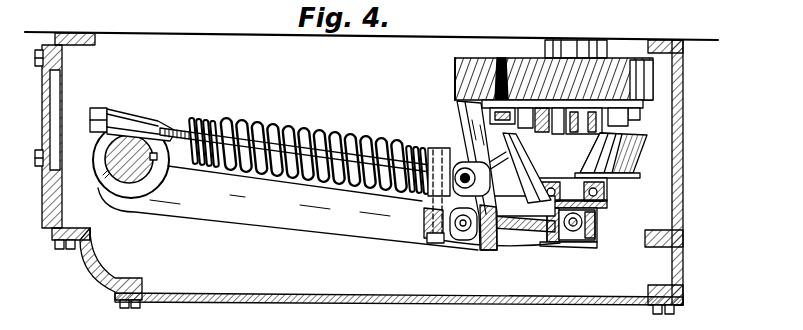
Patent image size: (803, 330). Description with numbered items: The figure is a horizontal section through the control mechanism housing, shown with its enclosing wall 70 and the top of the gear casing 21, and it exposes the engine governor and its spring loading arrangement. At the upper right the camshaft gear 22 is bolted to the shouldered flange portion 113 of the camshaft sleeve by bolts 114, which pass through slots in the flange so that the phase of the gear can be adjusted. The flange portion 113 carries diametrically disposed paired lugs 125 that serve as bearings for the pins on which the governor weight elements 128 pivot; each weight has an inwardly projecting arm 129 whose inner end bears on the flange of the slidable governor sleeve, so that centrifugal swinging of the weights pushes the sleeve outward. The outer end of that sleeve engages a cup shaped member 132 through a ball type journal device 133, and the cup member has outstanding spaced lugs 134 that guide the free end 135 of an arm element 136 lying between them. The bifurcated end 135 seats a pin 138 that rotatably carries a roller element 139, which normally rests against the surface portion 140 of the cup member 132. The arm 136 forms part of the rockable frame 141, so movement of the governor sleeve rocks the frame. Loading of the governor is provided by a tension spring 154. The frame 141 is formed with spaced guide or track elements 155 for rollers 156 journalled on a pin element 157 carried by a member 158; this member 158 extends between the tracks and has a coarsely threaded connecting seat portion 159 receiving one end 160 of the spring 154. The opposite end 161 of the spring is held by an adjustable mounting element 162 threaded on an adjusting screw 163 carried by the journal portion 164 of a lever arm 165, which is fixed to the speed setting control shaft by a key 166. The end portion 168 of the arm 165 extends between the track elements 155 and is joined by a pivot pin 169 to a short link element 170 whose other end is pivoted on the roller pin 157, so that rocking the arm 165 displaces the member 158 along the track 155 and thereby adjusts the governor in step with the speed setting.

The motor gear casing 21 is at (455, 72).
The gear 22 is at (656, 78).
The casing 70 is at (683, 173).
The shouldered flange portion 113 is at (643, 108).
The bolts 114 is at (640, 118).
The paired lugs 125 is at (534, 129).
The governor weight element 128 is at (632, 168).
The inwardly projecting arm 129 is at (592, 130).
The cup shaped member 132 is at (603, 205).
The journal device 133 is at (606, 192).
The outstanding spaced lugs 134 is at (592, 230).
The free end 135 is at (551, 243).
The arm element 136 is at (525, 236).
The pin 138 is at (592, 238).
The roller element 139 is at (576, 240).
The surface portion 140 is at (592, 219).
The frame 141 is at (457, 105).
The tension spring 154 is at (352, 137).
The guide or track elements 155 is at (440, 243).
The rollers 156 is at (479, 178).
The pin element 157 is at (480, 168).
The member 158 is at (450, 150).
The coarsely threaded connecting seat portion 159 is at (437, 150).
The end of governor spring 160 is at (417, 148).
The opposite end of loading spring 161 is at (221, 117).
The adjustable mounting element 162 is at (196, 117).
The adjusting screw 163 is at (172, 127).
The journal portion 164 is at (128, 120).
The lever arm 165 is at (220, 205).
The key 166 is at (157, 192).
The end portion 168 is at (438, 238).
The pivot pin 169 is at (463, 233).
The short link element 170 is at (490, 249).